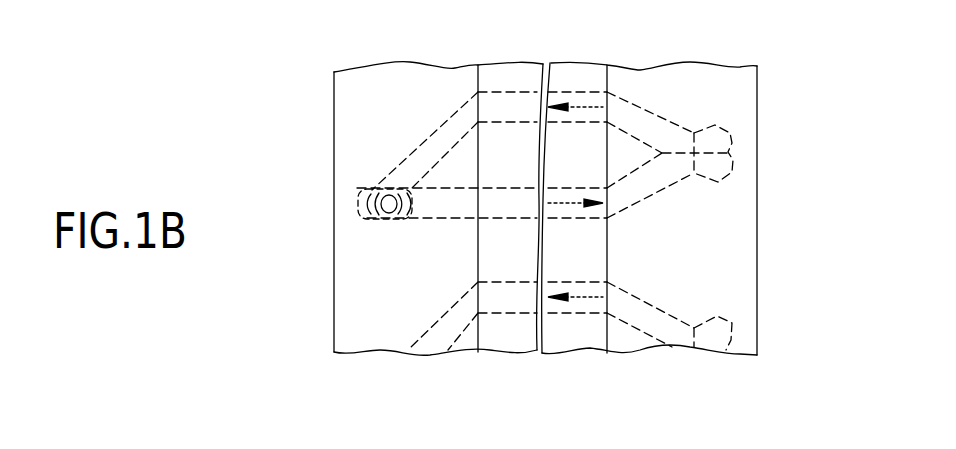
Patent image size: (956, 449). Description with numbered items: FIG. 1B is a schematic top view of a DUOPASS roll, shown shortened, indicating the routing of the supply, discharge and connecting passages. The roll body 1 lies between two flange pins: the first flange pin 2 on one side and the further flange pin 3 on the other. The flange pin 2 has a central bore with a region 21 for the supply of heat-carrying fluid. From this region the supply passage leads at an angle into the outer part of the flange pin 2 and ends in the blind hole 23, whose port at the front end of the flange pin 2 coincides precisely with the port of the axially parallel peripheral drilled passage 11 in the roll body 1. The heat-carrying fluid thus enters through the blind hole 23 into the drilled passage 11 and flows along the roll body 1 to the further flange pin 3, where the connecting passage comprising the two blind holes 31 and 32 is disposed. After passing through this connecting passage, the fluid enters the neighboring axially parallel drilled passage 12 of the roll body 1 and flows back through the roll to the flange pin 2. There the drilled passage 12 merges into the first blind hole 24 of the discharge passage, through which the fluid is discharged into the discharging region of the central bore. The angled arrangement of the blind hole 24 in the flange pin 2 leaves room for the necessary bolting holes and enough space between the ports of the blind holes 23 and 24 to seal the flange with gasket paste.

The roll body 1 is at (526, 333).
The flange pin 2 is at (363, 303).
The further flange pin 3 is at (735, 94).
The axially parallel drilled passage 11 is at (513, 193).
The axially parallel drilled passage 12 is at (533, 100).
The region for the supply of heat-carrying fluid 21 is at (242, 15).
The blind hole 23 is at (442, 215).
The first blind hole 24 is at (442, 130).
The blind hole 31 is at (658, 188).
The blind hole 32 is at (683, 130).